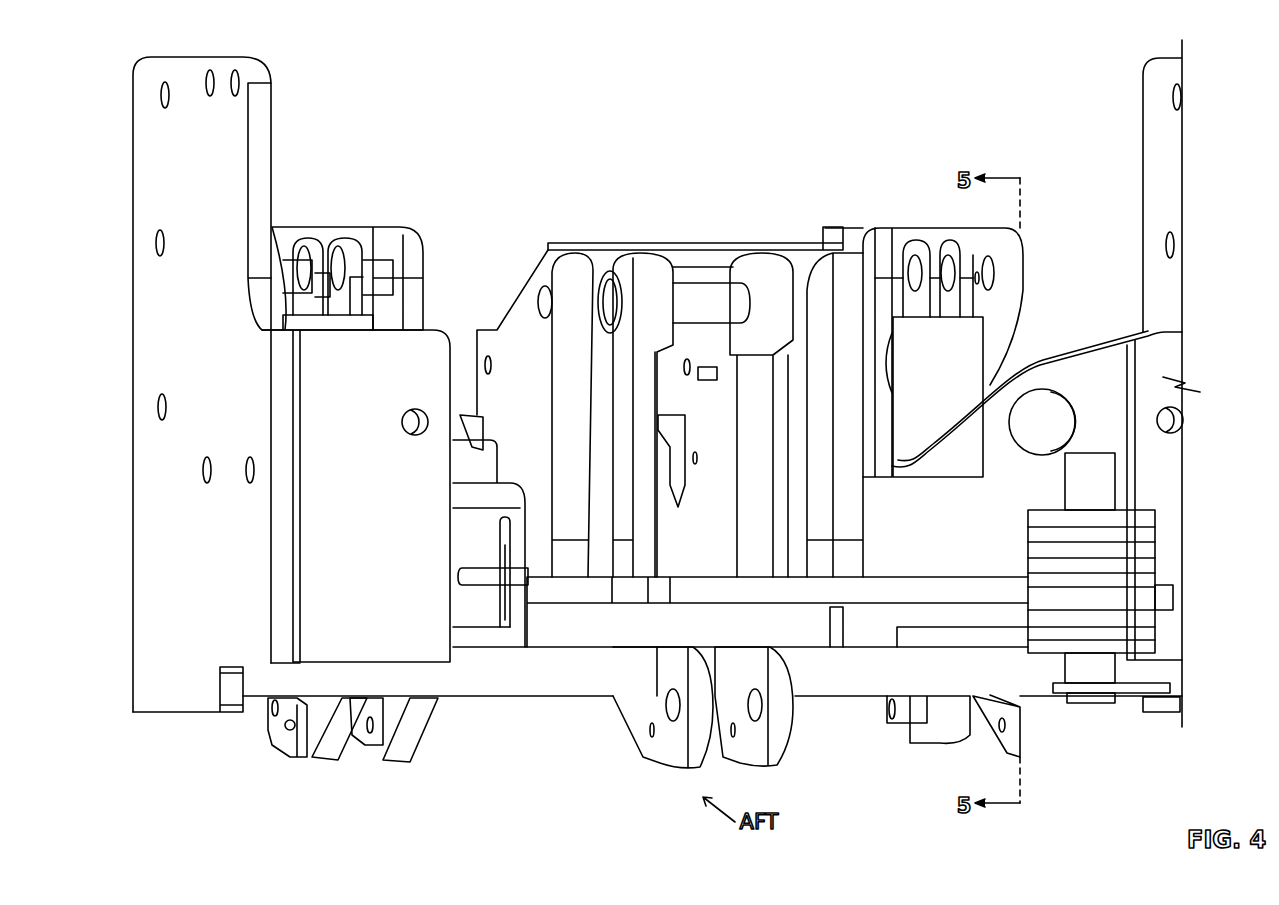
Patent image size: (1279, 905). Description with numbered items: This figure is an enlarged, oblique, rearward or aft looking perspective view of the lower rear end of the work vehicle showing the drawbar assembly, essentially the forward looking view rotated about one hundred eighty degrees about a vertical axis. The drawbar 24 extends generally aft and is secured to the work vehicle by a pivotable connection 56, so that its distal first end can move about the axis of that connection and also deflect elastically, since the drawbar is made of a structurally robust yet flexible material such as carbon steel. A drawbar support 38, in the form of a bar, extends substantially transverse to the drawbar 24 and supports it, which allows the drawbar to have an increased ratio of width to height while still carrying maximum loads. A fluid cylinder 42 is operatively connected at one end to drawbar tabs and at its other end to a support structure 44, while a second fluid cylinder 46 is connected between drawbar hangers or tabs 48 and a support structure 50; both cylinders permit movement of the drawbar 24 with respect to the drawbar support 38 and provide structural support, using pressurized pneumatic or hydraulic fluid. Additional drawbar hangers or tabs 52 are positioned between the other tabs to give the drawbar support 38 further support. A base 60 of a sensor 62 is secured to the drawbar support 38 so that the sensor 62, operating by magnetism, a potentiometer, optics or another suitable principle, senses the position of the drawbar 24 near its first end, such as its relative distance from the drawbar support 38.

The drawbar 24 is at (557, 603).
The drawbar support 38 is at (487, 698).
The fluid cylinder 42 is at (987, 353).
The support structure 44 is at (1025, 260).
The fluid cylinder 46 is at (380, 323).
The drawbar hangers or tabs 48 is at (302, 758).
The support structure 50 is at (425, 245).
The drawbar hangers or tabs 52 is at (660, 767).
The pivotable connection 56 is at (1087, 703).
The base 60 is at (498, 540).
The sensor 62 is at (472, 588).